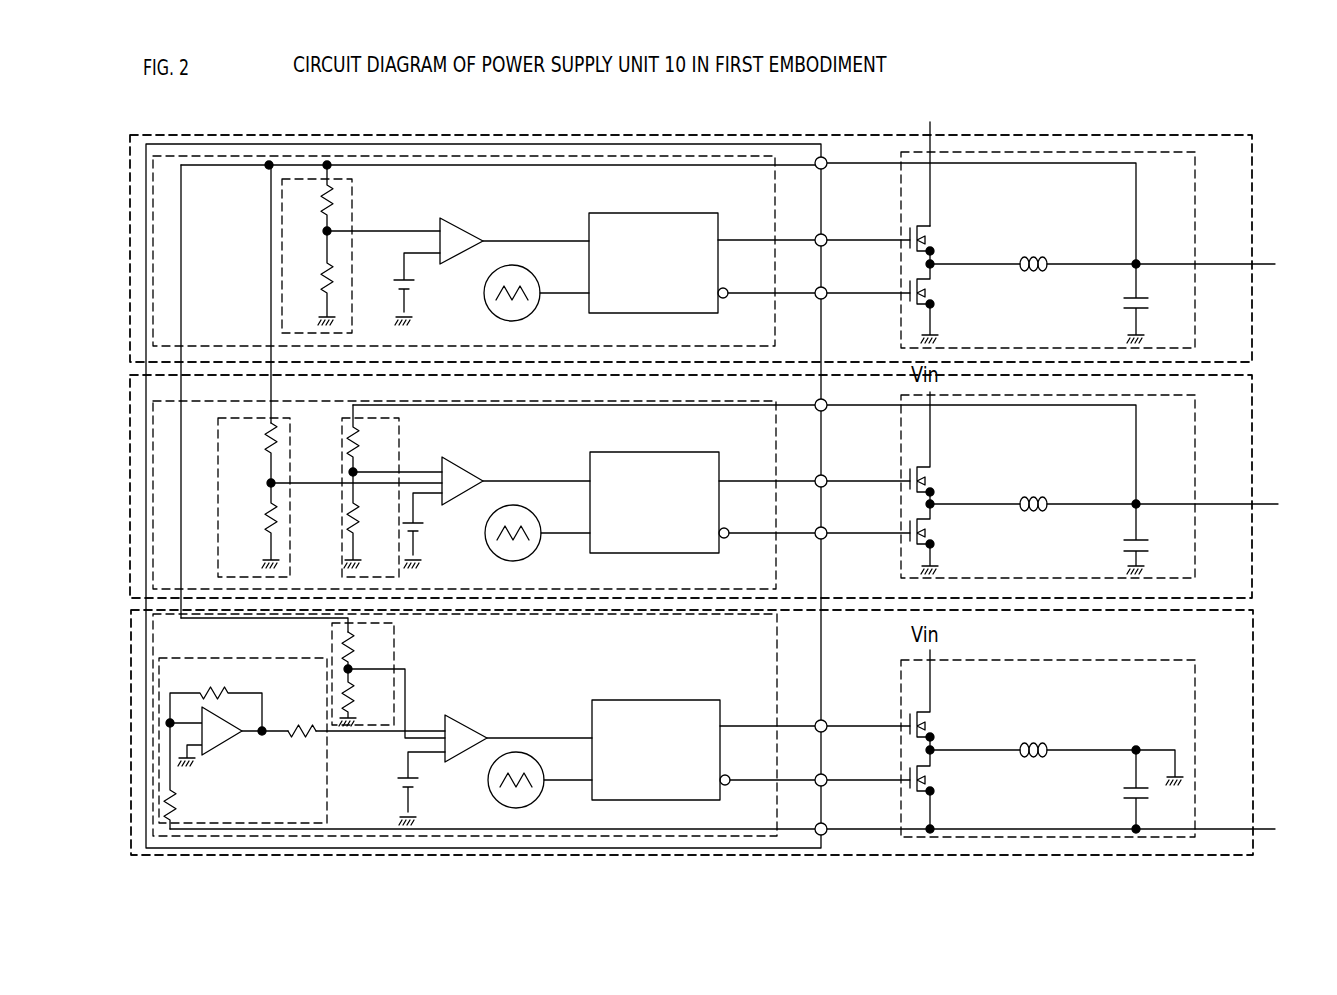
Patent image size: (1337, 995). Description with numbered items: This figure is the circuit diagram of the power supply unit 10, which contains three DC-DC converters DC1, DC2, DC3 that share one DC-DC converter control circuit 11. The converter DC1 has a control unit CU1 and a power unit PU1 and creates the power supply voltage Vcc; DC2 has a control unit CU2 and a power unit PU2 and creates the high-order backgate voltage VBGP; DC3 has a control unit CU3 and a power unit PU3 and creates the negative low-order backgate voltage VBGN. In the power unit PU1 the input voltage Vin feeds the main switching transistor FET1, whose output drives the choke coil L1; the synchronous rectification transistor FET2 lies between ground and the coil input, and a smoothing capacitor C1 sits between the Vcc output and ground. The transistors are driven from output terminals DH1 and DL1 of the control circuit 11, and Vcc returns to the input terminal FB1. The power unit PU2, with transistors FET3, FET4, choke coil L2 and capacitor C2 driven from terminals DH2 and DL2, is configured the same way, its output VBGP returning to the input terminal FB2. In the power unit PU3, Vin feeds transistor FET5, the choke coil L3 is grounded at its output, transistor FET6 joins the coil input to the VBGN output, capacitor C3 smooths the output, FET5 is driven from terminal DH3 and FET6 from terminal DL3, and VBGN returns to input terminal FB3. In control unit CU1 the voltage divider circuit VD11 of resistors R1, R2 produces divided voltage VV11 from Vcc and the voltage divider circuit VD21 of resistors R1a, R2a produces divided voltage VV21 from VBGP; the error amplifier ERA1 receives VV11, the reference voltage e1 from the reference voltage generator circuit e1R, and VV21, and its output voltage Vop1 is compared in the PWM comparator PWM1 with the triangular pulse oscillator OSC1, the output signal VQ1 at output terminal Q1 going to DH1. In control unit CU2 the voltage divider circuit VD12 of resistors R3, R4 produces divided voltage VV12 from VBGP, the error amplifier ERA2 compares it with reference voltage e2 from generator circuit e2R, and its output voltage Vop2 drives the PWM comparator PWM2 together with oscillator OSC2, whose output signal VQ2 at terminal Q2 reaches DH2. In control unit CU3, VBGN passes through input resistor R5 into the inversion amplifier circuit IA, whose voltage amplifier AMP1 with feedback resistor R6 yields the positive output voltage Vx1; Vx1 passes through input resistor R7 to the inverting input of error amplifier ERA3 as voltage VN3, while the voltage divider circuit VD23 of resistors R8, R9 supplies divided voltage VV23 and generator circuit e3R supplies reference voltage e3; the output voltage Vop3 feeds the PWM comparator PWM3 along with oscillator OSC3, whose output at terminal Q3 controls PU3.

The power supply unit 10 is at (642, 130).
The DC-DC converter control circuit 11 is at (329, 142).
The DC-DC converter DC2 is at (1253, 172).
The DC-DC converter DC1 is at (1255, 412).
The DC-DC converter DC3 is at (1255, 663).
The control unit CU2 is at (776, 180).
The control unit CU1 is at (776, 420).
The control unit CU3 is at (777, 648).
The power unit PU2 is at (1196, 188).
The power unit PU1 is at (1196, 428).
The power unit PU3 is at (1196, 693).
The input terminal FB2 is at (658, 210).
The input terminal FB1 is at (744, 451).
The input terminal FB3 is at (518, 819).
The voltage divider circuit VD12 is at (352, 186).
The voltage divider circuit VD11 is at (399, 421).
The voltage divider circuit VD21 is at (292, 414).
The voltage divider circuit VD23 is at (396, 640).
The input resistor R1 is at (365, 438).
The ground resistor R2 is at (364, 520).
The input resistor R3 is at (311, 198).
The ground resistor R4 is at (312, 278).
The input resistor R5 is at (186, 776).
The feedback resistor R6 is at (216, 698).
The input resistor R7 is at (302, 715).
The input resistor R8 is at (363, 649).
The ground resistor R9 is at (361, 697).
The input resistor R1a is at (249, 453).
The ground resistor R2a is at (250, 525).
The divided voltage VV12 is at (381, 220).
The divided voltage VV11 is at (395, 462).
The divided voltage VV21 is at (354, 471).
The divided voltage VV23 is at (401, 695).
The error amplifier ERA2 is at (455, 229).
The error amplifier ERA1 is at (455, 469).
The error amplifier ERA3 is at (457, 726).
The reference voltage e2 is at (417, 282).
The reference voltage e1 is at (422, 524).
The reference voltage e3 is at (421, 782).
The reference voltage generator circuit e2R is at (414, 287).
The reference voltage generator circuit e1R is at (422, 532).
The reference voltage generator circuit e3R is at (417, 788).
The output voltage Vop2 is at (536, 226).
The output voltage Vop1 is at (536, 466).
The output voltage Vop3 is at (539, 722).
The triangular pulse oscillator OSC2 is at (536, 306).
The triangular pulse oscillator OSC1 is at (537, 546).
The triangular pulse oscillator OSC3 is at (540, 791).
The PWM comparator PWM2 is at (602, 213).
The PWM comparator PWM1 is at (606, 452).
The PWM comparator PWM3 is at (607, 700).
The comparator output Q2 is at (705, 266).
The non-inverting output terminal Q1 is at (706, 506).
The comparator output Q3 is at (707, 752).
The output signal VQ2 is at (766, 226).
The output signal VQ1 is at (767, 467).
The high-side drive terminal DH2 is at (862, 231).
The output terminal DH1 is at (862, 471).
The output terminal DH3 is at (815, 716).
The low-side drive terminal DL2 is at (862, 284).
The output terminal DL1 is at (862, 523).
The low-side drive terminal DL3 is at (820, 770).
The input voltage Vin is at (925, 159).
The transistor FET1 is at (948, 450).
The transistor FET2 is at (948, 539).
The high-side transistor FET3 is at (948, 239).
The low-side transistor FET4 is at (948, 303).
The transistor FET5 is at (948, 702).
The transistor FET6 is at (948, 791).
The choke coil L1 is at (1033, 488).
The inductor L2 is at (1033, 248).
The choke coil L3 is at (1056, 749).
The smoothing capacitor C1 is at (1122, 537).
The capacitor C2 is at (1122, 301).
The smoothing capacitor C3 is at (1122, 789).
The high-order backgate voltage VBGP is at (1230, 264).
The power supply voltage Vcc is at (1224, 504).
The low-order backgate voltage VBGN is at (1077, 830).
The inversion amplifier circuit IA is at (252, 657).
The voltage amplifier AMP1 is at (226, 746).
The output voltage Vx1 is at (265, 748).
The voltage VN3 is at (380, 746).